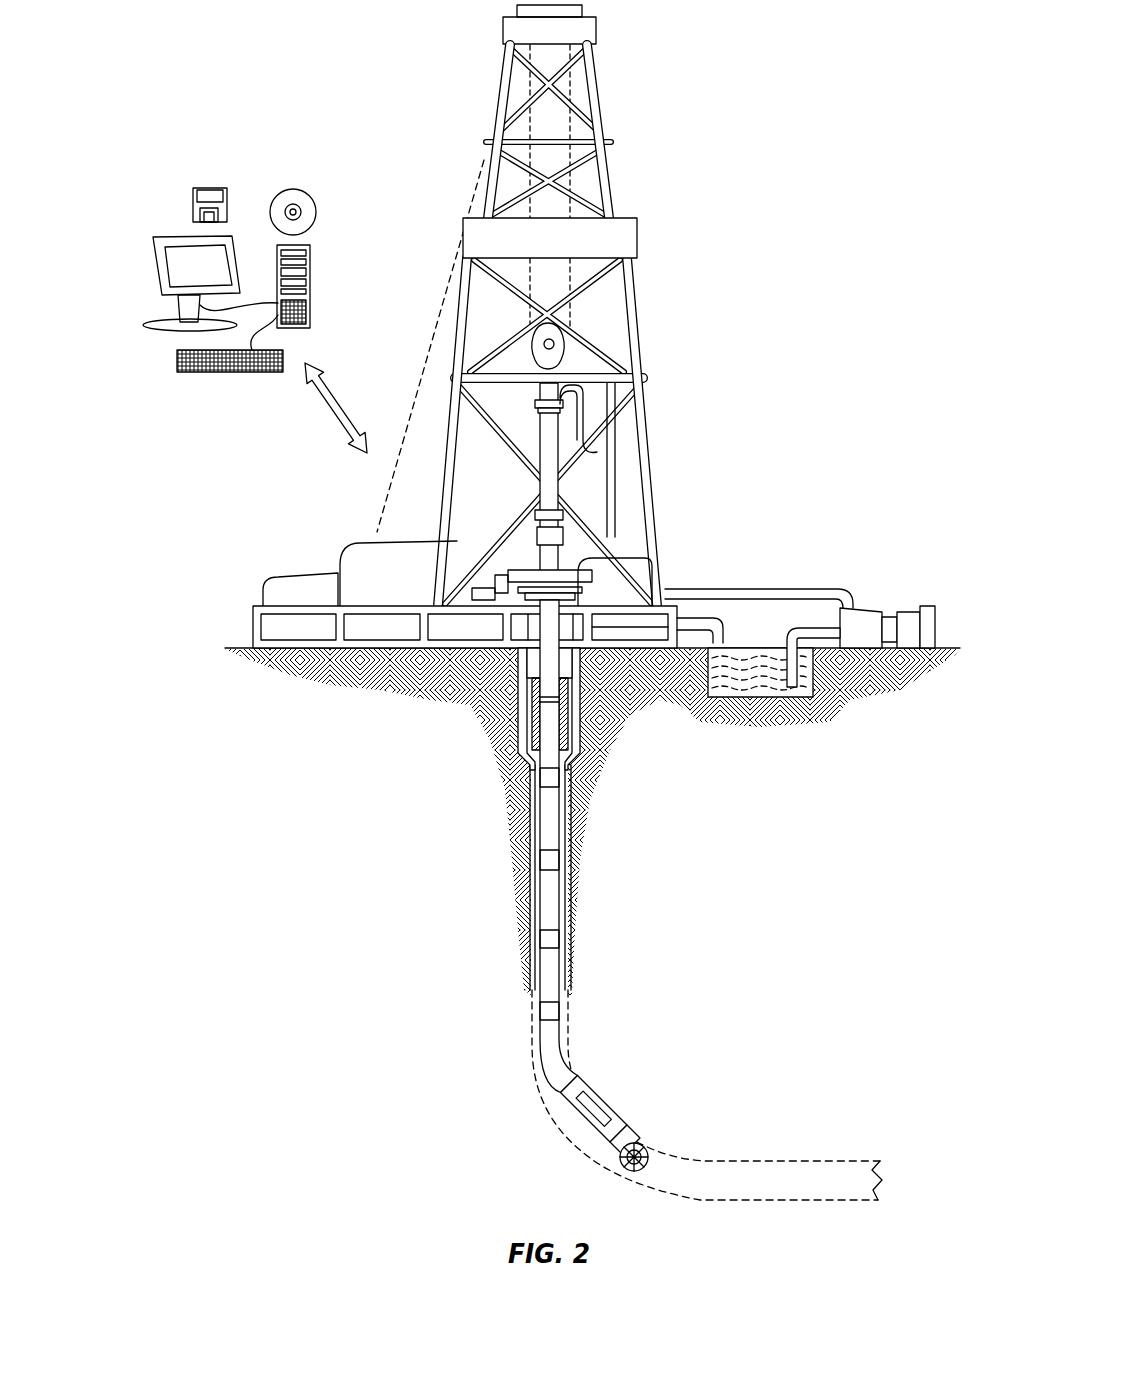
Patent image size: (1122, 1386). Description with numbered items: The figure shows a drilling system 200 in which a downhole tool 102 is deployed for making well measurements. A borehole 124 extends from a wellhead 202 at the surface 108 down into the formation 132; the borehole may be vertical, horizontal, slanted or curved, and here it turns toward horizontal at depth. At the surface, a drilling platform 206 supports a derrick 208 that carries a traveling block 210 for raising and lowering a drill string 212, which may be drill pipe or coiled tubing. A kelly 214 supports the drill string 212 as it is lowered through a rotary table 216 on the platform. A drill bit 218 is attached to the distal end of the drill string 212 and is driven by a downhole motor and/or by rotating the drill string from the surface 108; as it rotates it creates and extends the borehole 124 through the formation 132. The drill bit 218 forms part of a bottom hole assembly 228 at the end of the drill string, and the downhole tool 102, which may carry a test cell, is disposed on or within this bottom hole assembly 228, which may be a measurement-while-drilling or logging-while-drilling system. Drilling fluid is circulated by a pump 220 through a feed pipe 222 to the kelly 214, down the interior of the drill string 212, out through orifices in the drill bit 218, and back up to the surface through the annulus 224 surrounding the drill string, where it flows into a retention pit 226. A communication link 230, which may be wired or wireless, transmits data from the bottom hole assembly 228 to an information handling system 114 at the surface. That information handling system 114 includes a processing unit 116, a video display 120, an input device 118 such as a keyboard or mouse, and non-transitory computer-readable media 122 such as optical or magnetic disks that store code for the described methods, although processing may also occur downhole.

The drilling system 200 is at (868, 108).
The information handling system 114 is at (227, 284).
The non-transitory computer-readable media 122 is at (290, 188).
The video display 120 is at (158, 277).
The processing unit 116 is at (312, 257).
The input device 118 is at (190, 373).
The communication link 230 is at (323, 413).
The derrick 208 is at (608, 160).
The traveling block 210 is at (572, 347).
The kelly 214 is at (550, 432).
The rotary table 216 is at (585, 568).
The wellhead 202 is at (597, 594).
The drilling platform 206 is at (252, 628).
The feed pipe 222 is at (788, 586).
The pump 220 is at (868, 607).
The surface 108 is at (945, 645).
The retention pit 226 is at (757, 683).
The drill string 212 is at (562, 832).
The annulus 224 is at (528, 850).
The borehole 124 is at (578, 850).
The formation 132 is at (798, 944).
The downhole tool 102 is at (605, 1113).
The drill bit 218 is at (648, 1150).
The bottom hole assembly 228 is at (558, 1110).